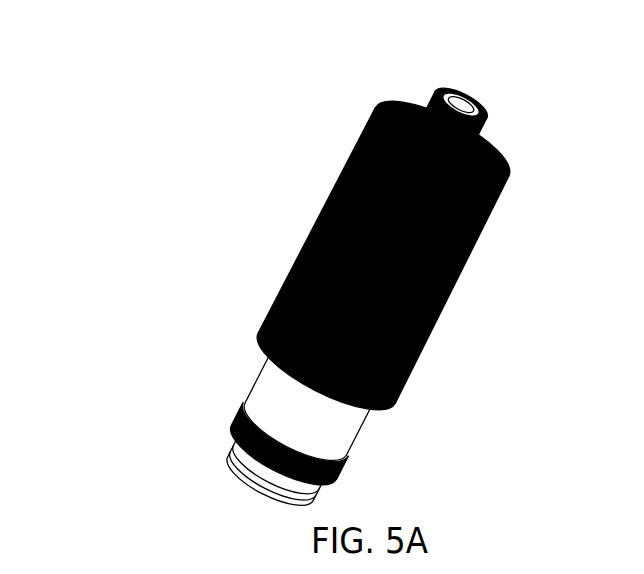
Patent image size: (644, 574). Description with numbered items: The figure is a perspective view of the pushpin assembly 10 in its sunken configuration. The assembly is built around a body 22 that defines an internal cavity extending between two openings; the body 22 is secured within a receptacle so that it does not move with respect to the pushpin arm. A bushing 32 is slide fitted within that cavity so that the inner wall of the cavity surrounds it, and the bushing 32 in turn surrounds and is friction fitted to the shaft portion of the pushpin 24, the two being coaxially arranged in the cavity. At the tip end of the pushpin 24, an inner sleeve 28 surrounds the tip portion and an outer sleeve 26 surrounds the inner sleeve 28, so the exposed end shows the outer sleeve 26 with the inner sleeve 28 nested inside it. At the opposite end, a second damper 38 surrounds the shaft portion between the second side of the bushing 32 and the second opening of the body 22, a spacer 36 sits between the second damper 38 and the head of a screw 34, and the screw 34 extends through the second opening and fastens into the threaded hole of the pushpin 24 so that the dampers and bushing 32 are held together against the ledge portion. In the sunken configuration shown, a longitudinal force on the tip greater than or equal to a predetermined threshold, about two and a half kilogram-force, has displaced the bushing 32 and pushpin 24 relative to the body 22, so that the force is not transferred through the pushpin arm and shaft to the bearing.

The pushpin assembly 10 is at (141, 88).
The body 22 is at (310, 237).
The pushpin 24 is at (463, 80).
The outer sleeve 26 is at (460, 133).
The inner sleeve 28 is at (468, 105).
The bushing 32 is at (265, 382).
The screw 34 is at (245, 467).
The spacer 36 is at (230, 432).
The second damper 38 is at (333, 453).